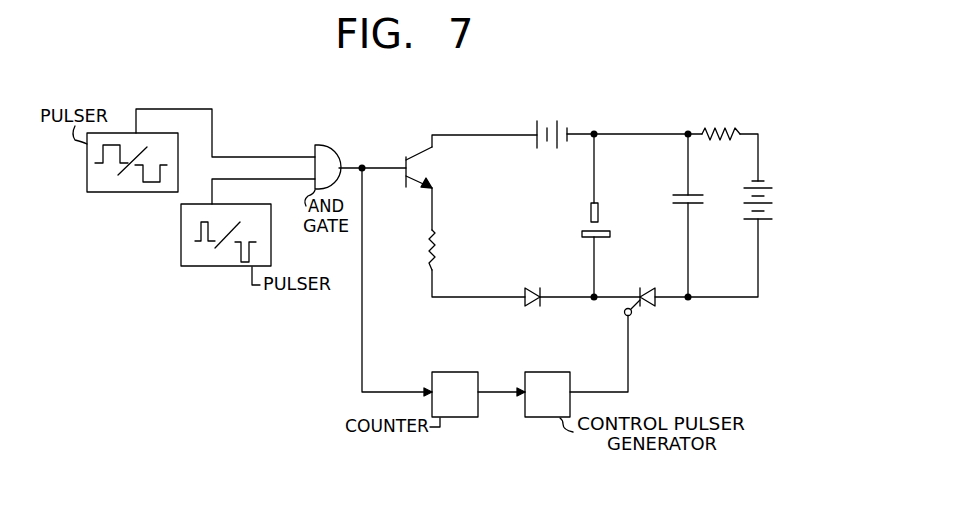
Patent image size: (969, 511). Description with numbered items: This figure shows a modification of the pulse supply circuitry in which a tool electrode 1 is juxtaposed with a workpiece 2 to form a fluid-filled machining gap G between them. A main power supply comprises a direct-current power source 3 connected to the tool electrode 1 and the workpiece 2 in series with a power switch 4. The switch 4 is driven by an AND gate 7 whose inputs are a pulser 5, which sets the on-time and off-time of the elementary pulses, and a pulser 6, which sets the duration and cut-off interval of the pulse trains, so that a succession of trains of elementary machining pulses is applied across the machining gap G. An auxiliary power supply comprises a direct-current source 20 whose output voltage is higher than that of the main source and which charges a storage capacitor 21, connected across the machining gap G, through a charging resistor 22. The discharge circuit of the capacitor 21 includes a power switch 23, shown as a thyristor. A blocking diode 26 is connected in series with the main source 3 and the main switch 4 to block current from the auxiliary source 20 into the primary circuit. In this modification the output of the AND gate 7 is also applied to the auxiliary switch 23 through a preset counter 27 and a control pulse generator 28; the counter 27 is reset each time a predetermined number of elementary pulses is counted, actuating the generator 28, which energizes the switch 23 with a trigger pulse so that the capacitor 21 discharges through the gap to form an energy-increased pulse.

The tool electrode 1 is at (600, 205).
The workpiece 2 is at (603, 238).
The direct-current power source 3 is at (548, 120).
The power switch 4 is at (422, 170).
The pulser 5 is at (232, 267).
The pulser 6 is at (130, 193).
The AND gate 7 is at (328, 145).
The direct-current source 20 is at (767, 180).
The storage capacitor 21 is at (668, 198).
The charging resistor 22 is at (722, 125).
The power switch 23 is at (648, 307).
The blocking diode 26 is at (533, 305).
The preset counter 27 is at (450, 418).
The control pulse generator 28 is at (545, 418).
The machining gap G is at (587, 229).